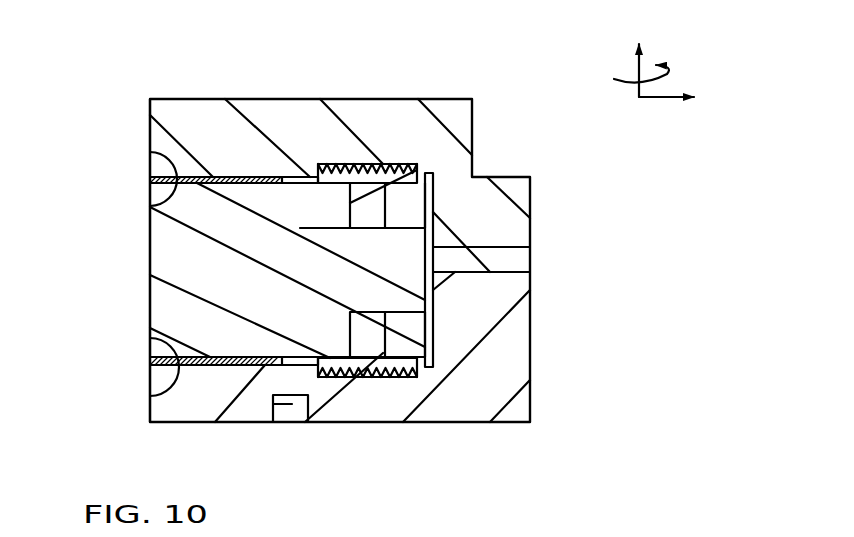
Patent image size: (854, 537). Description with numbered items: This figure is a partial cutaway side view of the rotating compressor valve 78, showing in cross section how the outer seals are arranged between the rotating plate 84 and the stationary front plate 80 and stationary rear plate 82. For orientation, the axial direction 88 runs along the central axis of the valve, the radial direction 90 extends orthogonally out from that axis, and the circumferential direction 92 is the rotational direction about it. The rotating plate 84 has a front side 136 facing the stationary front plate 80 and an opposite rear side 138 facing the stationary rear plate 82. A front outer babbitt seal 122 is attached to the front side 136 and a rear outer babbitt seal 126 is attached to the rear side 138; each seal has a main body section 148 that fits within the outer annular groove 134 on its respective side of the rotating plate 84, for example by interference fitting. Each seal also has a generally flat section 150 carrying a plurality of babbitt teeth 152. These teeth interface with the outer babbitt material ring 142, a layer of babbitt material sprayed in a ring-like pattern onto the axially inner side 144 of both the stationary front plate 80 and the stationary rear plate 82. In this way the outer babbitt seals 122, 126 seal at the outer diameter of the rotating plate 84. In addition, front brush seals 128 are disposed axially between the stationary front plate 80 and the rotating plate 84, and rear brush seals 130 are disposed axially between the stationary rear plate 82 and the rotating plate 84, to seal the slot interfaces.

The rotating compressor valve 78 is at (169, 46).
The stationary front plate 80 is at (462, 118).
The stationary rear plate 82 is at (507, 375).
The rotating plate 84 is at (173, 307).
The axial direction 88 is at (638, 65).
The radial direction 90 is at (663, 98).
The circumferential direction 92 is at (624, 85).
The front outer babbitt seal 122 is at (332, 191).
The rear outer babbitt seal 126 is at (333, 329).
The front brush seals 128 is at (150, 180).
The rear brush seals 130 is at (152, 359).
The outer annular groove 134 is at (353, 220).
The front side 136 is at (151, 210).
The rear side 138 is at (150, 338).
The outer babbitt material ring 142 is at (369, 164).
The axially inner side 144 is at (150, 151).
The main body section 148 is at (380, 308).
The generally flat section 150 is at (336, 164).
The babbitt teeth 152 is at (408, 165).